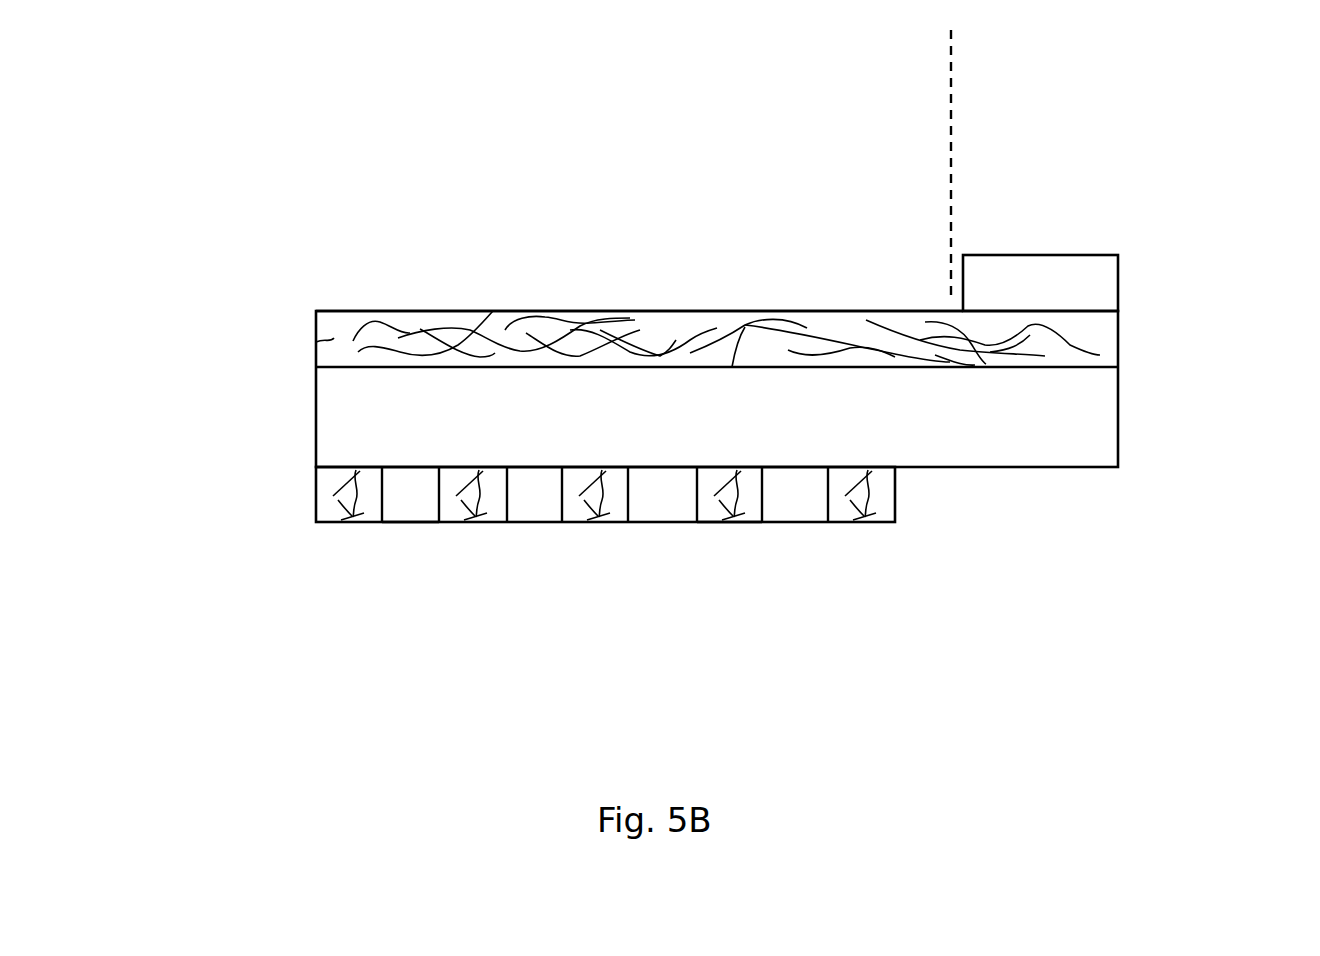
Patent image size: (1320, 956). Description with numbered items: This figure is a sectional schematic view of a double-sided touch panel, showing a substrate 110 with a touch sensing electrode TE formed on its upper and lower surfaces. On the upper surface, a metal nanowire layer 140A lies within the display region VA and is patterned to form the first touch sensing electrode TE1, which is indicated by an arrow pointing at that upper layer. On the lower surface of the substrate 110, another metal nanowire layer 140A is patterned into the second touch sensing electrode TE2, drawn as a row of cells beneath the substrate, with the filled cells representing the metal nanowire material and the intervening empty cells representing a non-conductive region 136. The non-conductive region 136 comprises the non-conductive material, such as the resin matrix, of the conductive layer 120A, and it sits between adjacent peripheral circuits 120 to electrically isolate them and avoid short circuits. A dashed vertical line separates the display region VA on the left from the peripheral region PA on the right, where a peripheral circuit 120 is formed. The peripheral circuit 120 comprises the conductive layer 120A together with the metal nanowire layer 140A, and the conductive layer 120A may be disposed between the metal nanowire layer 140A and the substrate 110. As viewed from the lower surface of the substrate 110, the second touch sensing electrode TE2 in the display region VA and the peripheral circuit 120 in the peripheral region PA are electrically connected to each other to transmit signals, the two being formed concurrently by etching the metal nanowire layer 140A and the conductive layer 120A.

The substrate 110 is at (345, 434).
The peripheral circuit 120 is at (1115, 250).
The conductive layer 120A is at (1108, 293).
The metal nanowire layer 140A is at (328, 336).
The non-conductive region 136 is at (415, 528).
The touch sensing electrode TE is at (639, 400).
The first touch sensing electrode TE1 is at (613, 300).
The second touch sensing electrode TE2 is at (730, 528).
The display region VA is at (940, 87).
The peripheral region PA is at (1048, 87).